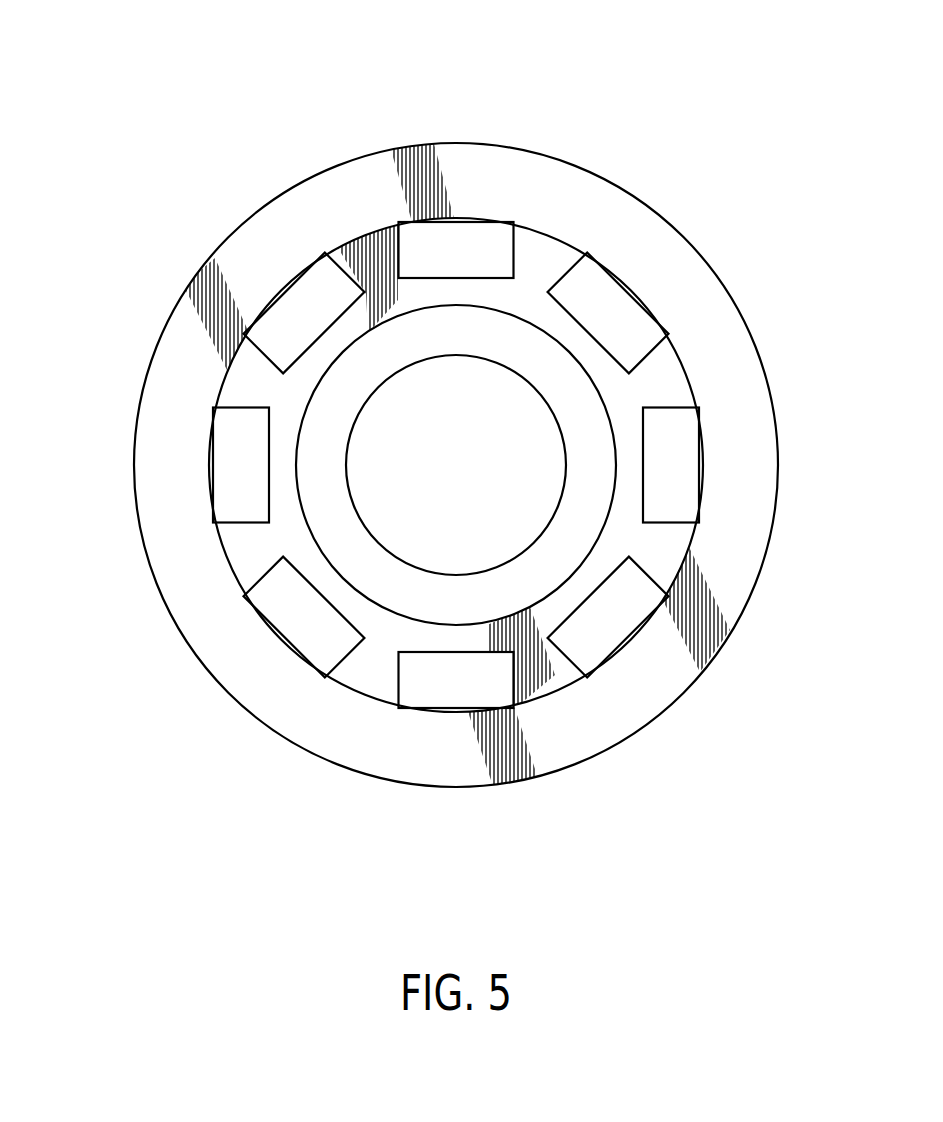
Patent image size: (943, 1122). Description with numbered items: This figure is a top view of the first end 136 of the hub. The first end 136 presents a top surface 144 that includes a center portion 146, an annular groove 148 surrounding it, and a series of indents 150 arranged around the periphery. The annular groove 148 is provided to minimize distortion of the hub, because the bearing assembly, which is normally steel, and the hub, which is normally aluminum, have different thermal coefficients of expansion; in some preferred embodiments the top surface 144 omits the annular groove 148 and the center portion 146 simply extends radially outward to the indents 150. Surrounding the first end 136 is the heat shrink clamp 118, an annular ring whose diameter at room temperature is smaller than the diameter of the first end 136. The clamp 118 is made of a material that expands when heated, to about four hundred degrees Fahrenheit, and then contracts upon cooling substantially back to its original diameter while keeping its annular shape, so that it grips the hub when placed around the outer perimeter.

The heat shrink clamp 118 is at (455, 753).
The first end 136 is at (455, 142).
The top surface 144 is at (670, 379).
The center portion 146 is at (477, 395).
The annular groove 148 is at (405, 335).
The indents 150 is at (295, 622).